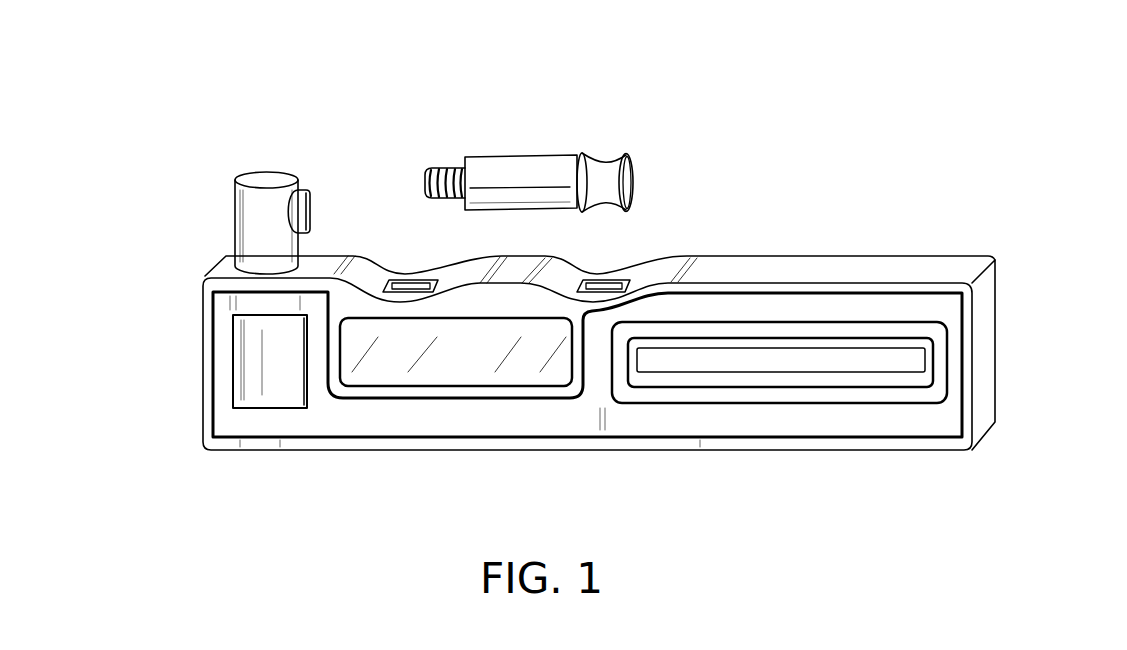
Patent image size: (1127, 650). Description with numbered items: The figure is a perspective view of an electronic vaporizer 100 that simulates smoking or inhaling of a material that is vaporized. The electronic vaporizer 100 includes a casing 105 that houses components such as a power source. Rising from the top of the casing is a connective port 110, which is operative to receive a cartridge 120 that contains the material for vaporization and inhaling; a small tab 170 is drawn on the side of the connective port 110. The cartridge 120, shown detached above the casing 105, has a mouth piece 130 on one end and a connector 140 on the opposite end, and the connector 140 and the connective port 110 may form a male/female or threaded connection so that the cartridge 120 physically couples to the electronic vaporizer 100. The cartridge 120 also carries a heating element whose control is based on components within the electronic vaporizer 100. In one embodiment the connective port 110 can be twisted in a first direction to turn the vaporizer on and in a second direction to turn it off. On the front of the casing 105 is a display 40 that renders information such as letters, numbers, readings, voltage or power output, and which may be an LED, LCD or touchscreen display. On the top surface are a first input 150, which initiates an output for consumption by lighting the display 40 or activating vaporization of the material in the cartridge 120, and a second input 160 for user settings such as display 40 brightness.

The electronic vaporizer 100 is at (988, 171).
The casing 105 is at (883, 423).
The display 40 is at (406, 378).
The connective port 110 is at (247, 222).
The connector tab 170 is at (307, 215).
The cartridge 120 is at (563, 168).
The mouth piece 130 is at (607, 158).
The connector 140 is at (448, 165).
The first input 150 is at (608, 282).
The top slot 160 is at (413, 284).